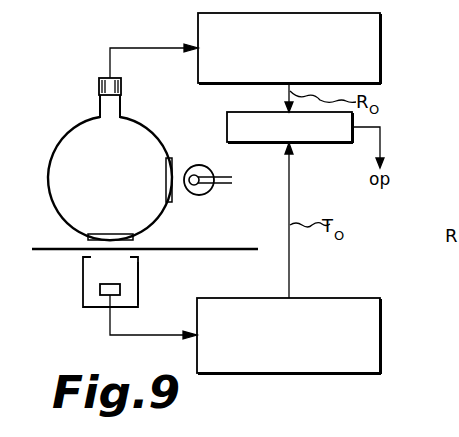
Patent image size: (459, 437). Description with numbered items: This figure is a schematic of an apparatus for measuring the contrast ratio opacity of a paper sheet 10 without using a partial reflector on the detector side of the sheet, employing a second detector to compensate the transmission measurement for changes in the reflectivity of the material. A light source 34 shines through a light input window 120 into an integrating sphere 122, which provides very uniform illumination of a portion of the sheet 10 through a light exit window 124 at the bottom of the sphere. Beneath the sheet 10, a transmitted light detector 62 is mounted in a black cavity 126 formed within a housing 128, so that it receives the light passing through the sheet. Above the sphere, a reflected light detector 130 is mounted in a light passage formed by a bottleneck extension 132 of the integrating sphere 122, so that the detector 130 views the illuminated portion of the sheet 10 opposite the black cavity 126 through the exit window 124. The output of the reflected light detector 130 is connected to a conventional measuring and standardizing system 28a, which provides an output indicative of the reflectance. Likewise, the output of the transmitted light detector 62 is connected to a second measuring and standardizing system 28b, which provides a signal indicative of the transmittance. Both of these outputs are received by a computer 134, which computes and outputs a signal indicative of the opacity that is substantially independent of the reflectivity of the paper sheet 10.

The measuring and standardizing system 28a is at (198, 29).
The measuring and standardizing system 28b is at (330, 298).
The reflected light detector 130 is at (99, 85).
The bottleneck extension 132 is at (122, 103).
The integrating sphere 122 is at (76, 125).
The light input window 120 is at (166, 176).
The light exit window 124 is at (108, 234).
The sheet 10 is at (210, 246).
The light source 34 is at (207, 194).
The housing 128 is at (84, 274).
The black cavity 126 is at (128, 276).
The transmitted light detector 62 is at (104, 297).
The computer 134 is at (315, 143).